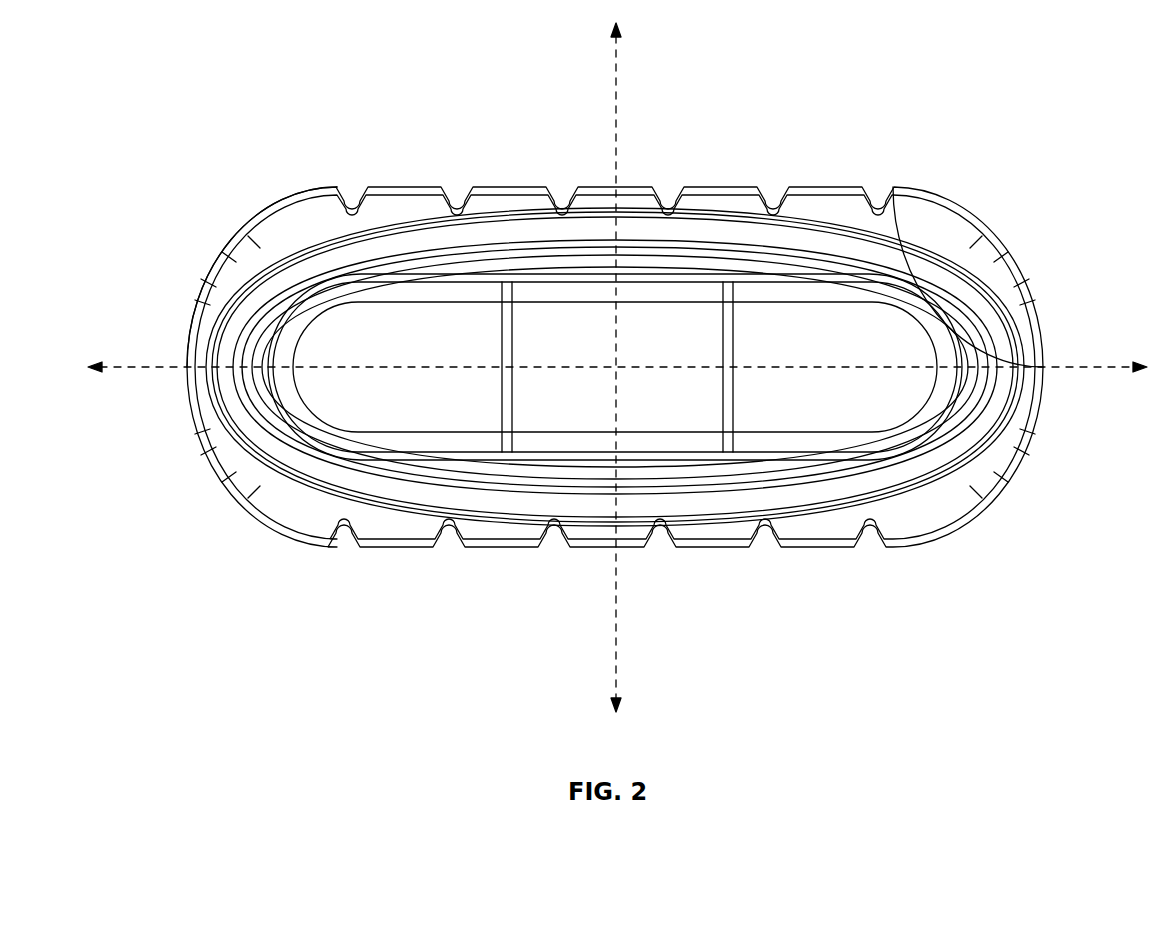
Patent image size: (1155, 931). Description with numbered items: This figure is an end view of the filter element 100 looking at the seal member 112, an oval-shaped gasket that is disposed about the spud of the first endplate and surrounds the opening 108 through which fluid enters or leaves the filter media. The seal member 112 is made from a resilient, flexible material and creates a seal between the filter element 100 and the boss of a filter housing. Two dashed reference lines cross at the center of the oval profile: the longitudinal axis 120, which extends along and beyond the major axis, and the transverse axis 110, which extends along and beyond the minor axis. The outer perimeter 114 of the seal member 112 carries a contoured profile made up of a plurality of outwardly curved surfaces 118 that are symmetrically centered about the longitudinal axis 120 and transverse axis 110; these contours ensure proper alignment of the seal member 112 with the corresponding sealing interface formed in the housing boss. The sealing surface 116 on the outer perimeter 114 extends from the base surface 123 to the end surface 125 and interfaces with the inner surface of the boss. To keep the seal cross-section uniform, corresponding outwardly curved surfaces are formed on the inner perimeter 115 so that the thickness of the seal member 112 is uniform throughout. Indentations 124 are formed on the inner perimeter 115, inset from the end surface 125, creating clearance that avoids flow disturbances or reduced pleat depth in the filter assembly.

The filter element 100 is at (950, 102).
The opening 108 is at (645, 393).
The transverse axis 110 is at (621, 150).
The seal member 112 is at (985, 282).
The outer perimeter 114 is at (241, 500).
The inner perimeter 115 is at (362, 283).
The sealing surface 116 is at (1012, 308).
The outwardly curved surfaces 118 is at (325, 240).
The longitudinal axis 120 is at (1086, 374).
The base surface 123 is at (242, 272).
The indentations 124 is at (515, 262).
The end surface 125 is at (333, 478).